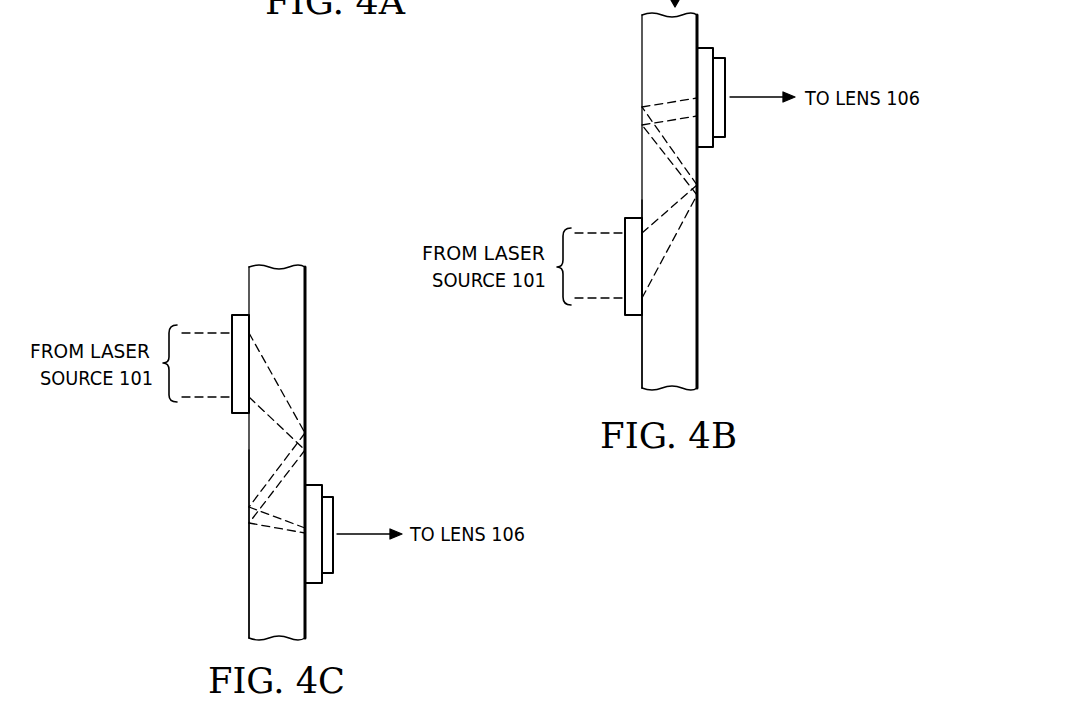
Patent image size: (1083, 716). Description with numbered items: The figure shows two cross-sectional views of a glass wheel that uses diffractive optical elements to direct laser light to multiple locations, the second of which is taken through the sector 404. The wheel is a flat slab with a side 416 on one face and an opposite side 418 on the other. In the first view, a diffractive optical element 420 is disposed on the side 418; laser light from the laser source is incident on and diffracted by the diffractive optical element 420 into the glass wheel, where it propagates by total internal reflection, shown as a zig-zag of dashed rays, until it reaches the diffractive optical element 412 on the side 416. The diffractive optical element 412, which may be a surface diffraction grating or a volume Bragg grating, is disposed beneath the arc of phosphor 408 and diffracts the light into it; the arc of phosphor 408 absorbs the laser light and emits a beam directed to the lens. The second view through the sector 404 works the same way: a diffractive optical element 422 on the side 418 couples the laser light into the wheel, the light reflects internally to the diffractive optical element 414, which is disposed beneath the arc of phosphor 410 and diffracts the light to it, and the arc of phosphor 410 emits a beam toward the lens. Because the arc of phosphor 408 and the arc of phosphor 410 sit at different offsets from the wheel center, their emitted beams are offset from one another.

In FIG. 4C, the sector 404 is at (270, 249).
In FIG. 4B, the arc of phosphor 408 is at (726, 127).
In FIG. 4C, the arc of phosphor 410 is at (333, 555).
In FIG. 4B, the diffractive optical element 412 is at (705, 48).
In FIG. 4C, the diffractive optical element 414 is at (310, 485).
In FIG. 4B, the side 416 is at (697, 292).
In FIG. 4C, the side 416 is at (305, 603).
In FIG. 4B, the side 418 is at (642, 349).
In FIG. 4C, the side 418 is at (248, 562).
In FIG. 4B, the diffractive optical element 420 is at (624, 217).
In FIG. 4C, the diffractive optical element 422 is at (240, 315).